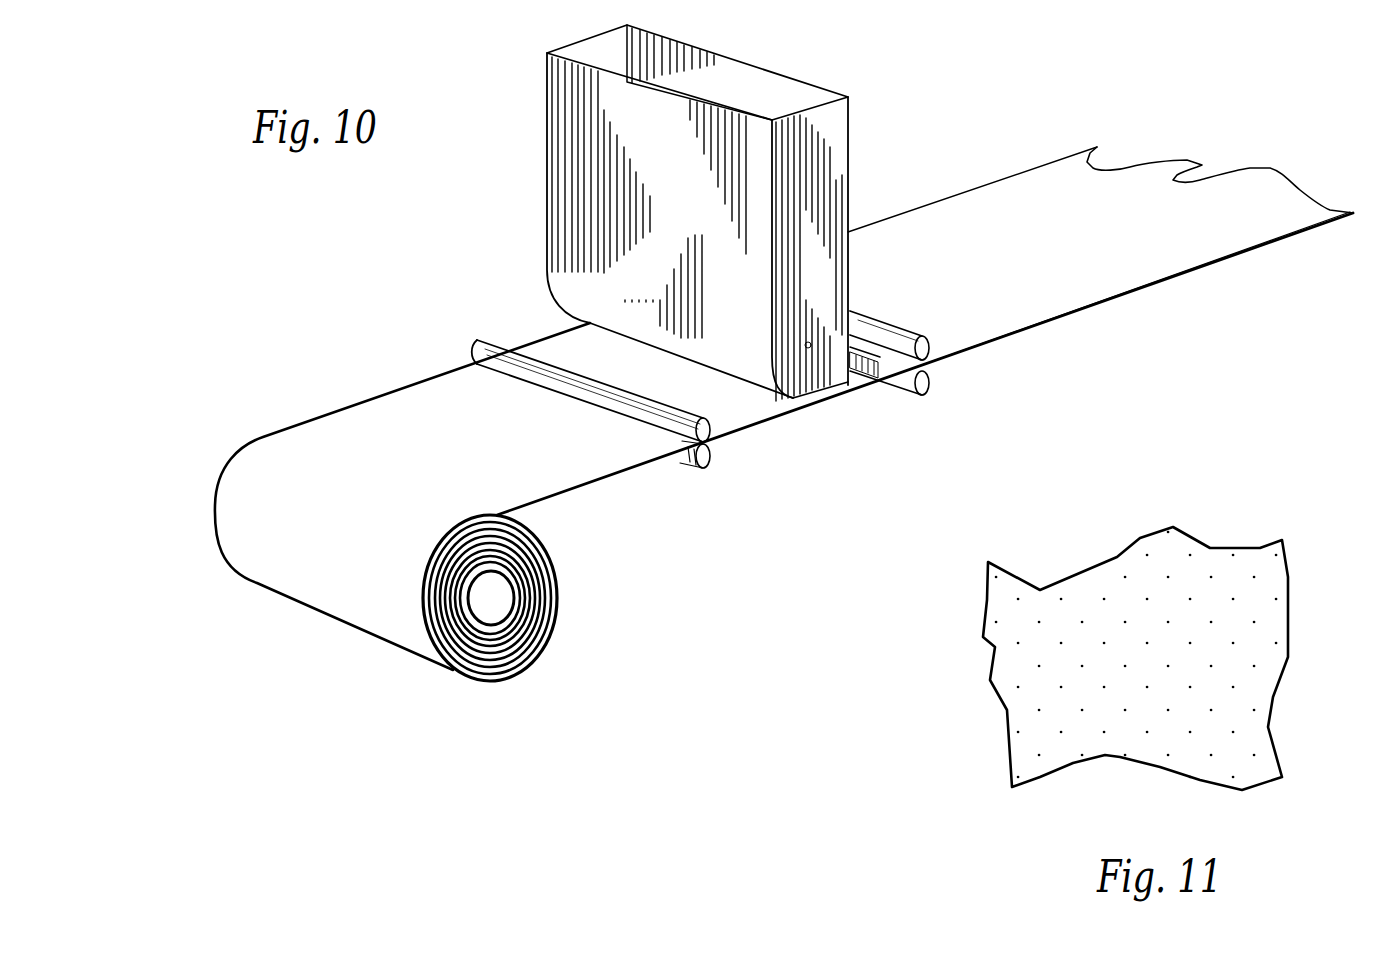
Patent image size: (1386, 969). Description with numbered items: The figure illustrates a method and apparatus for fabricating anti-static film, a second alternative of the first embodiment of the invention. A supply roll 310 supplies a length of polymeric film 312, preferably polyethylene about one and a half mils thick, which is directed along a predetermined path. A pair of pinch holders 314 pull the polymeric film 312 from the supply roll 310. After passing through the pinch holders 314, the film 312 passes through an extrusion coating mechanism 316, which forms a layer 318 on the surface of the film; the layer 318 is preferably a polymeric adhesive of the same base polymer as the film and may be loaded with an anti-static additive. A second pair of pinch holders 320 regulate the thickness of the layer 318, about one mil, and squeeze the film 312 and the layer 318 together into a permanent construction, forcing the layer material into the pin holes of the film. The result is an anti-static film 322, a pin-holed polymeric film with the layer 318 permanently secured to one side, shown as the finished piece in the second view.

In FIG. 10, the supply roll 310 is at (515, 668).
In FIG. 10, the polymeric film 312 is at (567, 497).
In FIG. 10, the pinch holders 314 is at (713, 428).
In FIG. 10, the extrusion coating mechanism 316 is at (547, 199).
In FIG. 10, the layer 318 is at (990, 268).
In FIG. 10, the pinch holders 320 is at (930, 347).
In FIG. 10, the anti-static film 322 is at (1275, 243).
In FIG. 11, the anti-static film 322 is at (1117, 633).